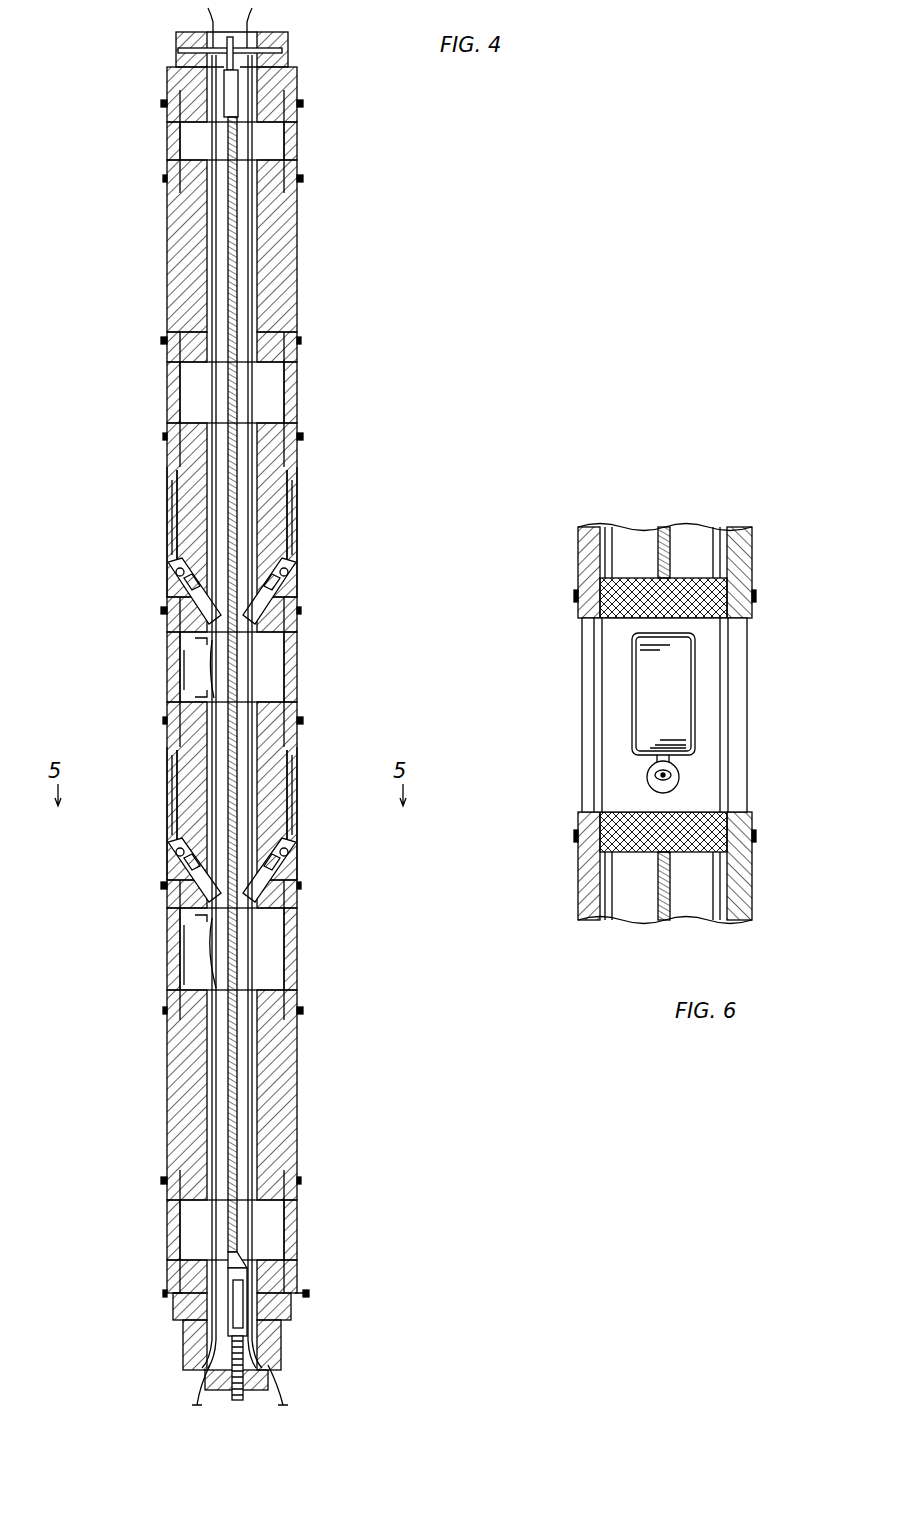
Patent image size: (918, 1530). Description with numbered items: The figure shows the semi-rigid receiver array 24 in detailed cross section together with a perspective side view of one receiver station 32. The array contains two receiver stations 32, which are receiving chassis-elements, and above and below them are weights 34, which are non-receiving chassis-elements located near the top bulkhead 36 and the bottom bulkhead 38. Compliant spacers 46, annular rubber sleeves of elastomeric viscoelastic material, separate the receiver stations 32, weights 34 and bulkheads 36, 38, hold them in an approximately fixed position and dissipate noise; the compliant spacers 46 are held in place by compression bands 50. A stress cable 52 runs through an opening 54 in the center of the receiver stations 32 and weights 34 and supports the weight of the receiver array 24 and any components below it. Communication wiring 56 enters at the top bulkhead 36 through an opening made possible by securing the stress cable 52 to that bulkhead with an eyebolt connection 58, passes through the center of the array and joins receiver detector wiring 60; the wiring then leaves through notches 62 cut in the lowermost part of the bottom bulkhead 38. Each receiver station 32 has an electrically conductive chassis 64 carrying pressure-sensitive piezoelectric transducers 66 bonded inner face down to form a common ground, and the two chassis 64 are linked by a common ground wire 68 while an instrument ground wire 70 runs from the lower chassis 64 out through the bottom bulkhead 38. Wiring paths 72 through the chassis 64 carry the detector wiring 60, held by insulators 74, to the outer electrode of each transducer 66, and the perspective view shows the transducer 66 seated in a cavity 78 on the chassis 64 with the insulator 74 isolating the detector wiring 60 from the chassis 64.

In FIG. 4, the semi-rigid receiver array 24 is at (319, 383).
In FIG. 4, the receiver station 32 is at (290, 472).
In FIG. 6, the receiver station 32 is at (544, 832).
In FIG. 4, the weight 34 is at (297, 248).
In FIG. 6, the weight 34 is at (665, 724).
In FIG. 4, the top bulkhead 36 is at (296, 78).
In FIG. 4, the bottom bulkhead 38 is at (306, 1312).
In FIG. 4, the compliant spacer 46 is at (178, 140).
In FIG. 4, the compression band 50 is at (162, 104).
In FIG. 4, the stress cable 52 is at (229, 397).
In FIG. 4, the opening 54 is at (208, 210).
In FIG. 4, the communication wiring 56 is at (262, 12).
In FIG. 4, the eyebolt connection 58 is at (178, 52).
In FIG. 4, the receiver detector wiring 60 is at (206, 640).
In FIG. 6, the receiver detector wiring 60 is at (658, 767).
In FIG. 4, the notch 62 is at (212, 1366).
In FIG. 4, the chassis 64 is at (190, 490).
In FIG. 6, the chassis 64 is at (583, 623).
In FIG. 4, the transducer 66 is at (176, 515).
In FIG. 6, the transducer 66 is at (672, 678).
In FIG. 4, the common ground wire 68 is at (200, 680).
In FIG. 4, the instrument ground wire 70 is at (216, 925).
In FIG. 4, the wiring path 72 is at (185, 605).
In FIG. 4, the insulator 74 is at (176, 578).
In FIG. 6, the insulator 74 is at (680, 778).
In FIG. 6, the cavity 78 is at (690, 733).